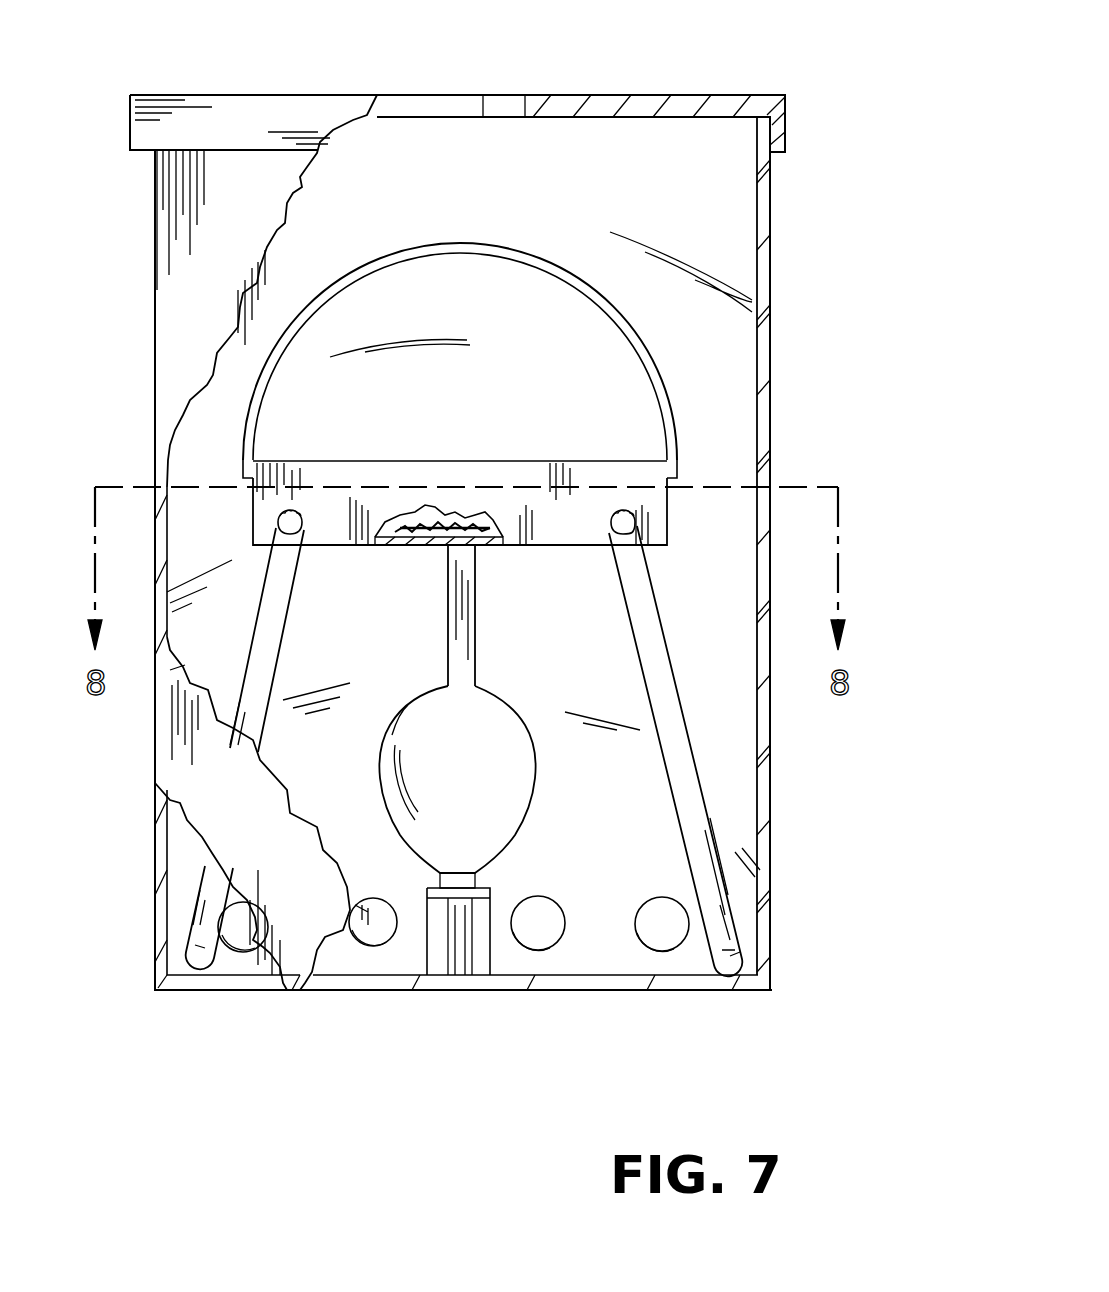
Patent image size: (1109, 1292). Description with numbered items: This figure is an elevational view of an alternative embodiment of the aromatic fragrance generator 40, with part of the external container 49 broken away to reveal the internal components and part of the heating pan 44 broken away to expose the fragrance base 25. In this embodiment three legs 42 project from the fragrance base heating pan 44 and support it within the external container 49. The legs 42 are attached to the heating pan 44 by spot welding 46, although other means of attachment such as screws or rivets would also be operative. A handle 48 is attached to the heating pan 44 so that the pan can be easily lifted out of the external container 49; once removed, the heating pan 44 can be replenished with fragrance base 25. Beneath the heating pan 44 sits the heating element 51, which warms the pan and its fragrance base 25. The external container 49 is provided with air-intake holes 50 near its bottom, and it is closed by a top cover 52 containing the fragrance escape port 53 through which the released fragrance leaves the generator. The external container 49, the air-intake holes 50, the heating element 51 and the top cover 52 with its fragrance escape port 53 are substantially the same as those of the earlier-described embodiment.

The fragrance base 25 is at (443, 530).
The aromatic fragrance generator 40 is at (809, 364).
The legs 42 is at (275, 598).
The heating pan 44 is at (652, 478).
The spot welding 46 is at (300, 530).
The handle 48 is at (461, 243).
The external container 49 is at (155, 292).
The air-intake holes 50 is at (352, 915).
The heating element 51 is at (513, 763).
The top cover 52 is at (693, 95).
The fragrance escape port 53 is at (483, 118).